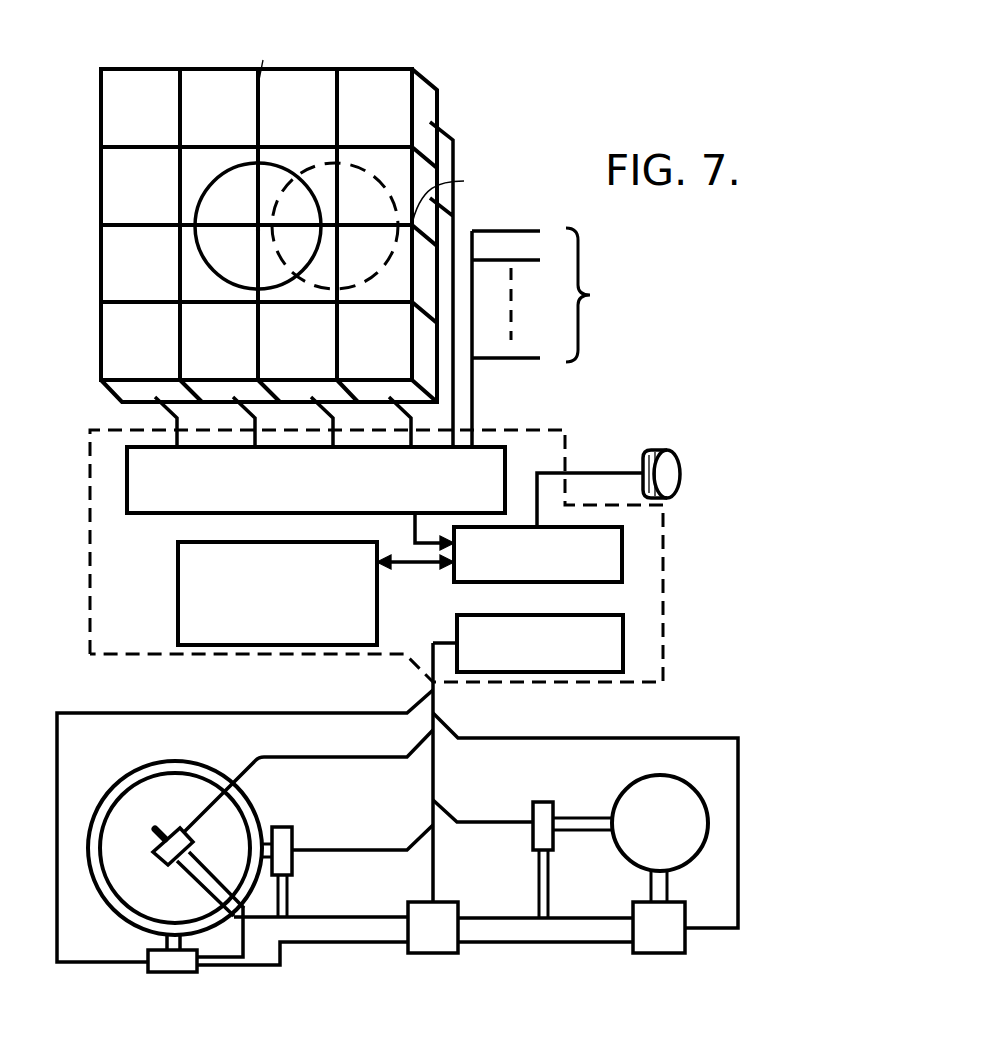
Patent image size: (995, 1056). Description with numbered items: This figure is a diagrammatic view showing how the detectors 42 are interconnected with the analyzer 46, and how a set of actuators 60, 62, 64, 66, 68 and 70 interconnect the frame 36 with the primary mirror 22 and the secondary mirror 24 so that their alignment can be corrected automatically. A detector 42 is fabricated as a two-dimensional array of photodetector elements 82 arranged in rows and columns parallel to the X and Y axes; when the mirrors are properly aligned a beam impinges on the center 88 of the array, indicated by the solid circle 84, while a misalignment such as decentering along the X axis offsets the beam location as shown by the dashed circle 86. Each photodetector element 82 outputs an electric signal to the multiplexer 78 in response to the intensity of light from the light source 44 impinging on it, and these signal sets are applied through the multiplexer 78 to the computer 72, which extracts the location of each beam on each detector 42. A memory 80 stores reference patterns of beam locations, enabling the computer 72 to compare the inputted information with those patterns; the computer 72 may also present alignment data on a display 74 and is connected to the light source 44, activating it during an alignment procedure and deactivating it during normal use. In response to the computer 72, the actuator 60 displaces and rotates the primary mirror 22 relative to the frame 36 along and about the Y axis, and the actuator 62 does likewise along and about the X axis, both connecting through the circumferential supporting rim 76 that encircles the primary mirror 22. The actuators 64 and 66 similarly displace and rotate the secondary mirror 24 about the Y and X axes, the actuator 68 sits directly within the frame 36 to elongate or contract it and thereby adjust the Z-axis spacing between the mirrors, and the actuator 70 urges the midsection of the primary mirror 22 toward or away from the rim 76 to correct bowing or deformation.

The detector 42 is at (323, 67).
The photodetector elements 82 is at (101, 88).
The solid circle 84 is at (208, 182).
The center of the detector 88 is at (258, 231).
The dashed circle 86 is at (377, 177).
The analyzer 46 is at (90, 445).
The multiplexer 78 is at (162, 514).
The computer 72 is at (455, 582).
The display 74 is at (623, 616).
The memory 80 is at (178, 630).
The light source 44 is at (667, 450).
The primary mirror 22 is at (161, 852).
The circumferential supporting rim 76 is at (89, 846).
The actuator 70 is at (168, 864).
The actuator 60 is at (148, 970).
The frame 36 is at (342, 932).
The actuator 62 is at (283, 826).
The actuator 68 is at (445, 940).
The actuator 64 is at (680, 954).
The actuator 66 is at (553, 851).
The secondary mirror 24 is at (626, 790).